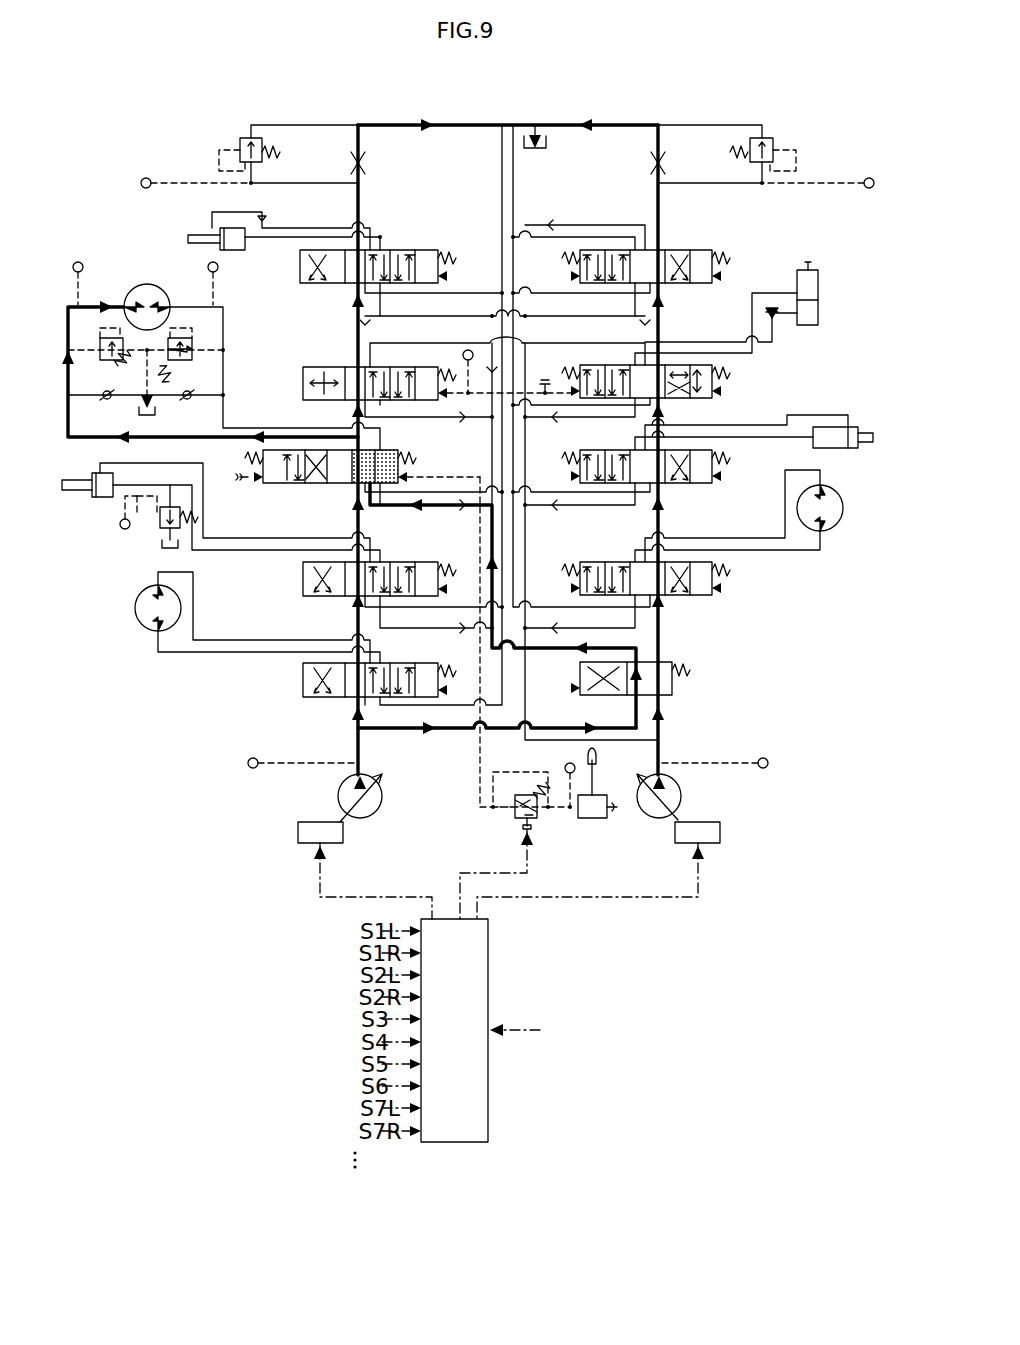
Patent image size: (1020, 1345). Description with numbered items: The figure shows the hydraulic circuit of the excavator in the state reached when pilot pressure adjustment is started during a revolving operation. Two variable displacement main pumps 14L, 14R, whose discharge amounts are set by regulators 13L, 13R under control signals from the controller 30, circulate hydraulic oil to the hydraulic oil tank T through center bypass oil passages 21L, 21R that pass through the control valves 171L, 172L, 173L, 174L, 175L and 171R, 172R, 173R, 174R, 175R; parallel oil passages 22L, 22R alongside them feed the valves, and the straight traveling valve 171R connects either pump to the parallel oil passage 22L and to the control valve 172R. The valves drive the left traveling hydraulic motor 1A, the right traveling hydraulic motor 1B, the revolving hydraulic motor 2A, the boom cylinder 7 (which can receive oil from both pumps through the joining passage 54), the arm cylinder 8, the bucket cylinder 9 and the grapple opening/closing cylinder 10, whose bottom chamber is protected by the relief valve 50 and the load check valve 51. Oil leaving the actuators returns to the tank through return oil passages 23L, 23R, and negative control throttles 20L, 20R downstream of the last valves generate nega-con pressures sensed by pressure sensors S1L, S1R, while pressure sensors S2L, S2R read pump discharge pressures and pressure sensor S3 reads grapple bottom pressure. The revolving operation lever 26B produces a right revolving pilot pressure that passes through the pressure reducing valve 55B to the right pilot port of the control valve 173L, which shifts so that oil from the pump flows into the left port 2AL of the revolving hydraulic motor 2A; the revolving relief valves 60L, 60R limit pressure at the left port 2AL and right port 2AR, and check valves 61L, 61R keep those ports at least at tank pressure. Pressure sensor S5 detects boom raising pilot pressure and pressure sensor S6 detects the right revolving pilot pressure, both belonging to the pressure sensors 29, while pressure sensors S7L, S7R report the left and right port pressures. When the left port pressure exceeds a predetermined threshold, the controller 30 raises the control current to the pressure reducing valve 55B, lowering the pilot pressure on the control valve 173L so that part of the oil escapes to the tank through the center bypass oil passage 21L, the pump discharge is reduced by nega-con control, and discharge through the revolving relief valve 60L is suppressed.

The left traveling hydraulic motor 1A is at (142, 590).
The right traveling hydraulic motor 1B is at (836, 490).
The revolving hydraulic motor 2A is at (148, 276).
The left port 2AL is at (123, 294).
The right port 2AR is at (171, 294).
The boom cylinder 7 is at (810, 262).
The arm cylinder 8 is at (200, 228).
The bucket cylinder 9 is at (854, 425).
The grapple opening/closing cylinder 10 is at (88, 498).
The regulator 13L is at (298, 828).
The regulator 13R is at (720, 826).
The main pump 14L is at (342, 790).
The main pump 14R is at (682, 790).
The negative control throttle 20L is at (354, 159).
The negative control throttle 20R is at (660, 161).
The center bypass oil passage 21L is at (356, 759).
The center bypass oil passage 21R is at (662, 736).
The parallel oil passage 22L is at (492, 457).
The parallel oil passage 22R is at (528, 527).
The return oil passage 23L is at (502, 202).
The return oil passage 23R is at (513, 202).
The revolving operation lever 26B is at (242, 475).
The pressure sensors 29 is at (528, 1030).
The controller 30 is at (490, 967).
The relief valve 50 is at (160, 520).
The load check valve 51 is at (442, 634).
The joining passage 54 is at (418, 343).
The pressure reducing valve 55B is at (518, 820).
The revolving relief valve 60L is at (96, 364).
The revolving relief valve 60R is at (194, 364).
The check valve 61L is at (107, 400).
The check valve 61R is at (189, 400).
The control valve 171L is at (299, 679).
The straight traveling valve 171R is at (672, 662).
The control valve 172L is at (294, 564).
The control valve 172R is at (720, 573).
The control valve 173L is at (272, 483).
The control valve 173R is at (720, 462).
The control valve 174L is at (322, 368).
The control valve 174R is at (720, 377).
The control valve 175L is at (299, 264).
The control valve 175R is at (720, 264).
The pressure sensor S1L is at (144, 177).
The pressure sensor S1R is at (867, 178).
The pressure sensor S2L is at (248, 763).
The pressure sensor S2R is at (768, 763).
The pressure sensor S3 is at (122, 532).
The pressure sensor S5 is at (464, 356).
The pressure sensor S6 is at (563, 766).
The pressure sensor S7L is at (78, 262).
The pressure sensor S7R is at (214, 272).
The hydraulic oil tank T is at (542, 142).